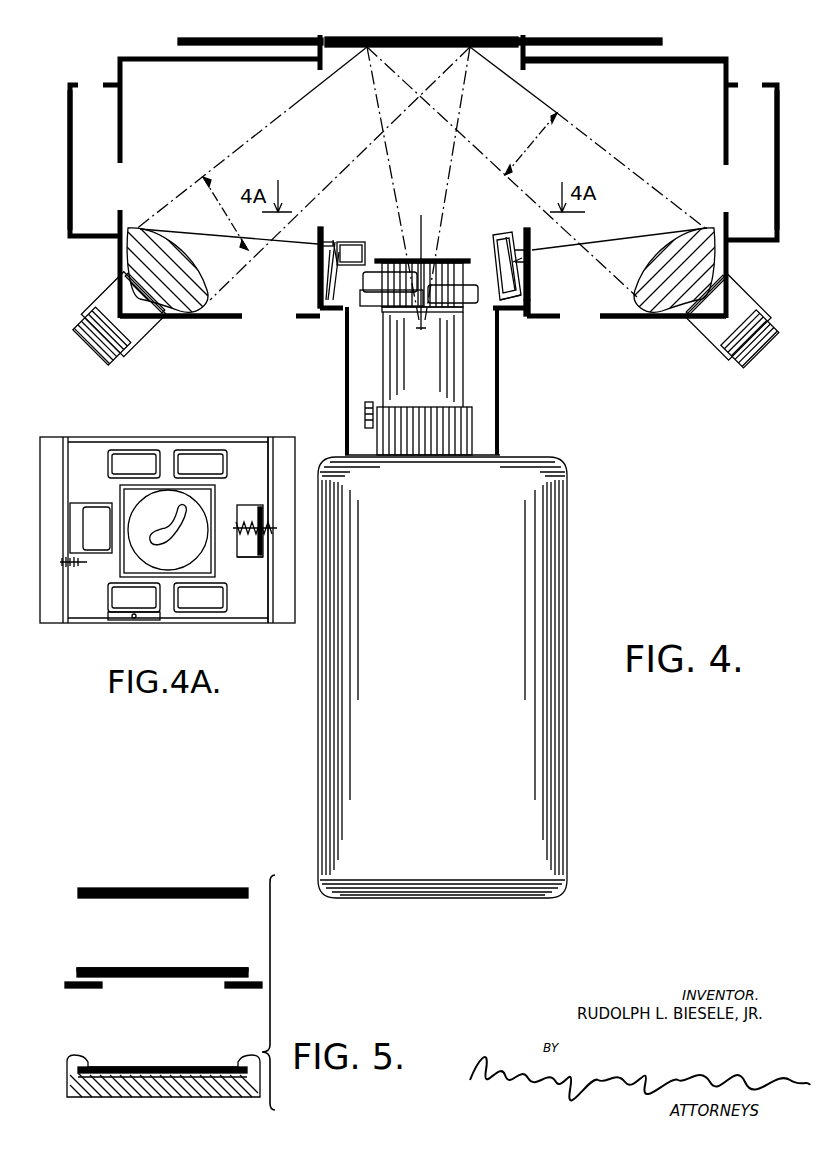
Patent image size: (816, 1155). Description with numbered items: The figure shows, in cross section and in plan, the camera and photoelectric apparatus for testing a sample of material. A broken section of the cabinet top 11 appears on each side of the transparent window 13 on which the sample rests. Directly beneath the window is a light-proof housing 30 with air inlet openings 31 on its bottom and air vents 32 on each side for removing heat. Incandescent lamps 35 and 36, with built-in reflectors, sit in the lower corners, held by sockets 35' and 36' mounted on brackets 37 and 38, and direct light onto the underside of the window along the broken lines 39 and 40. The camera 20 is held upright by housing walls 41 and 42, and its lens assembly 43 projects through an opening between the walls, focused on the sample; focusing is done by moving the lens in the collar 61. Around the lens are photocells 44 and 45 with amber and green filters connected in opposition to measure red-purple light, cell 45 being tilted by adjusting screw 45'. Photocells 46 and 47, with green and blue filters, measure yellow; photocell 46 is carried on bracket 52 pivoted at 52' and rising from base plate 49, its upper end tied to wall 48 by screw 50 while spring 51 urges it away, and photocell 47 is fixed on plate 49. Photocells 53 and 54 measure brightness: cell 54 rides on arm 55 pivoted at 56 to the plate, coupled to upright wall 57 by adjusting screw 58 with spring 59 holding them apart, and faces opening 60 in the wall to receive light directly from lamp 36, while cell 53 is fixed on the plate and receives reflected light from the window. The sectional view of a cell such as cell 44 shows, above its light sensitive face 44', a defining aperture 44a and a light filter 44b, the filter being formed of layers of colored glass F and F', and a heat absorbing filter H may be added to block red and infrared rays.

In FIG. 4, the flat top 11 is at (246, 38).
In FIG. 4, the transparent window 13 is at (506, 37).
In FIG. 4, the camera 20 is at (567, 552).
In FIG. 4, the light-proof housing 30 is at (718, 58).
In FIG. 4, the air inlet openings 31 is at (270, 322).
In FIG. 4, the air vents 32 is at (96, 84).
In FIG. 4, the incandescent lamp 35 is at (176, 264).
In FIG. 4, the socket 35' is at (99, 352).
In FIG. 4, the incandescent lamp 36 is at (666, 264).
In FIG. 4, the socket 36' is at (751, 353).
In FIG. 4, the bracket 37 is at (137, 352).
In FIG. 4, the bracket 38 is at (708, 348).
In FIG. 4, the broken lines 39 is at (225, 213).
In FIG. 4, the broken lines 40 is at (531, 144).
In FIG. 4, the housing wall 41 is at (345, 384).
In FIG. 4, the housing wall 42 is at (499, 383).
In FIG. 4, the lens assembly 43 is at (463, 362).
In FIG. 4A, the lens assembly 43 is at (152, 543).
In FIG. 4, the photocell 44 is at (457, 269).
In FIG. 4A, the photocell 44 is at (200, 613).
In FIG. 5, the photocell 44 is at (142, 1076).
In FIG. 5, the defining aperture 44a is at (256, 990).
In FIG. 5, the light filter 44b is at (250, 968).
In FIG. 5, the light sensitive face 44' is at (162, 1058).
In FIG. 4A, the photocell 45 is at (122, 614).
In FIG. 4A, the adjusting screw 45' is at (138, 628).
In FIG. 4, the photocell 46 is at (365, 249).
In FIG. 4A, the photocell 46 is at (96, 518).
In FIG. 4A, the photocell 47 is at (134, 462).
In FIG. 4, the upwardly extending wall 48 is at (318, 258).
In FIG. 4, the base plate 49 is at (334, 318).
In FIG. 4A, the base plate 49 is at (253, 612).
In FIG. 4, the screw 50 is at (320, 244).
In FIG. 4, the spring 51 is at (348, 243).
In FIG. 4, the bracket 52 is at (344, 271).
In FIG. 4, the pivot 52' is at (348, 276).
In FIG. 4A, the photocell 53 is at (198, 462).
In FIG. 4, the photocell 54 is at (514, 268).
In FIG. 4A, the photocell 54 is at (258, 562).
In FIG. 4, the arm 55 is at (497, 244).
In FIG. 4A, the arm 55 is at (237, 508).
In FIG. 4, the pivot 56 is at (531, 318).
In FIG. 4, the upright wall 57 is at (532, 246).
In FIG. 4, the adjusting screw 58 is at (528, 240).
In FIG. 4A, the adjusting screw 58 is at (278, 528).
In FIG. 4, the spring 59 is at (508, 236).
In FIG. 4A, the spring 59 is at (258, 508).
In FIG. 4, the opening 60 is at (522, 264).
In FIG. 4, the collar 61 is at (473, 426).
In FIG. 5, the heat absorbing filter H is at (78, 893).
In FIG. 5, the colored glass layer F is at (140, 970).
In FIG. 5, the colored glass layer F' is at (143, 949).